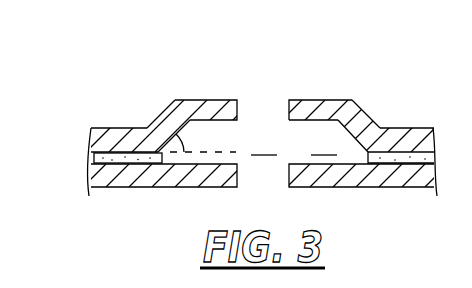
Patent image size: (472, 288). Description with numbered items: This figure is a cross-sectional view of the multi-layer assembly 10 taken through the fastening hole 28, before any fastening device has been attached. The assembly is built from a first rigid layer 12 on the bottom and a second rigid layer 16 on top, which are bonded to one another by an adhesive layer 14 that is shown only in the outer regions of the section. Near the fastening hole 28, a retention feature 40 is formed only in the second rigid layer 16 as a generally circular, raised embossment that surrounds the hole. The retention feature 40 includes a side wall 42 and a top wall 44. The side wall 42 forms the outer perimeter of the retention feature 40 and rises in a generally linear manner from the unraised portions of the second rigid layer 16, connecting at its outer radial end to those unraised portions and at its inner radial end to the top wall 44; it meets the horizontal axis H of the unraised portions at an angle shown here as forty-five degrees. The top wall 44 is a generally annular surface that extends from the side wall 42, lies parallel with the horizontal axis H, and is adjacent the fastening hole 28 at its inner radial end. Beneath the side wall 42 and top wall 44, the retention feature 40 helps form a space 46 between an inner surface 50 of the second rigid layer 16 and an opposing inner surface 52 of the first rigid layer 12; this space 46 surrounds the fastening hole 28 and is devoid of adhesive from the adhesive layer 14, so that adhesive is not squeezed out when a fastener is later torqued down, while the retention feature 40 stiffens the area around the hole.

The multi-layer assembly 10 is at (80, 157).
The first rigid layer 12 is at (165, 180).
The adhesive layer 14 is at (92, 159).
The second rigid layer 16 is at (135, 143).
The fastening hole 28 is at (263, 145).
The retention feature 40 is at (173, 88).
The side wall 42 is at (173, 118).
The top wall 44 is at (212, 112).
The space 46 is at (323, 145).
The inner surface of second rigid layer 50 is at (302, 122).
The inner surface of first rigid layer 52 is at (290, 159).
The horizontal axis H is at (225, 150).